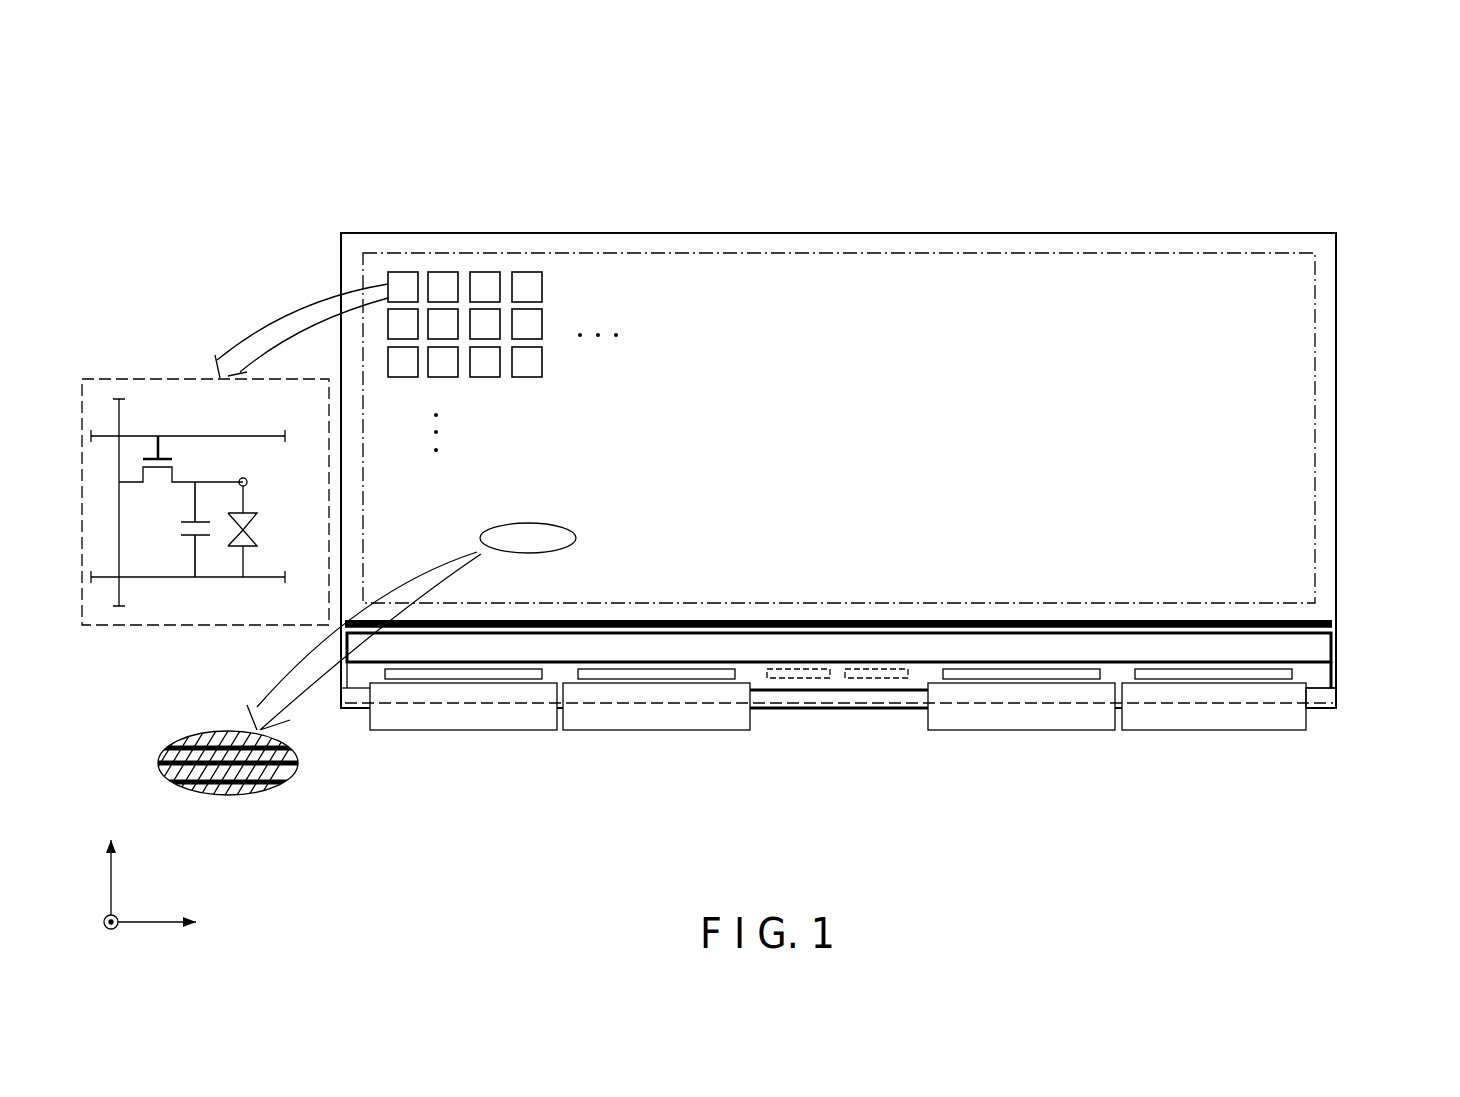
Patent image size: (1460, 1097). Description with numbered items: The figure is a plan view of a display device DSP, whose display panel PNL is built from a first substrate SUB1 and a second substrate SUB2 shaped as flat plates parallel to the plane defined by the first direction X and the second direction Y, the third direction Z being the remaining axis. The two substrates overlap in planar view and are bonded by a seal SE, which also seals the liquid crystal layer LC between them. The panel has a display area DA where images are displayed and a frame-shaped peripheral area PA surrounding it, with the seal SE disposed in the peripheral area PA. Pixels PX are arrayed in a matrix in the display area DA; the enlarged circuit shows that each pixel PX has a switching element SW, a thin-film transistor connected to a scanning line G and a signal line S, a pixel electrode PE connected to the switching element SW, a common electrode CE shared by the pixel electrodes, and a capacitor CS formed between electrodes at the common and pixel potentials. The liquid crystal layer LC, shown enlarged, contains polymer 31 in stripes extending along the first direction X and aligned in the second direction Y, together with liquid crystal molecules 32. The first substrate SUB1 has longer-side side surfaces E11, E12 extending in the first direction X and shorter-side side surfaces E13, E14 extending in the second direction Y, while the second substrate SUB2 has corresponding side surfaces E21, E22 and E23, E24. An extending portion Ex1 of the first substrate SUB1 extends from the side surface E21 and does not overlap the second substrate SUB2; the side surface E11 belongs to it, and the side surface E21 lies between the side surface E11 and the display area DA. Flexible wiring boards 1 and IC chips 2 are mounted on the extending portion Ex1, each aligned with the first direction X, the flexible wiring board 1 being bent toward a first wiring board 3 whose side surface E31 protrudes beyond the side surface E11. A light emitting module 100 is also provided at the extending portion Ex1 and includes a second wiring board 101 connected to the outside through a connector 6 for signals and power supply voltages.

The display device DSP is at (863, 407).
The display panel PNL is at (863, 467).
The second wiring board 101 is at (1333, 715).
The side surface E12 is at (838, 188).
The side surface E22 is at (1060, 231).
The side surface E13 is at (262, 450).
The side surface E23 is at (334, 251).
The side surface E14 is at (1393, 470).
The side surface E24 is at (1341, 320).
The side surface E11 is at (882, 694).
The side surface E21 is at (927, 631).
The side surface E31 is at (905, 712).
The first substrate SUB1 is at (1322, 675).
The second substrate SUB2 is at (1337, 371).
The display area DA is at (1286, 423).
The peripheral area PA is at (1321, 463).
The seal SE is at (1328, 503).
The liquid crystal layer LC is at (750, 676).
The pixel PX is at (485, 272).
The scanning line G is at (131, 436).
The signal line S is at (117, 517).
The switching element SW is at (182, 469).
The pixel electrode PE is at (250, 482).
The common electrode CE is at (263, 577).
The capacitor CS is at (176, 531).
The flexible wiring board 1 is at (440, 732).
The IC chip 2 is at (477, 680).
The first wiring board 3 is at (1322, 712).
The light emitting module 100 is at (763, 650).
The extending portion Ex1 is at (800, 681).
The connector 6 is at (807, 679).
The polymer 31 is at (202, 765).
The liquid crystal molecules 32 is at (214, 763).
The first direction X is at (152, 879).
The second direction Y is at (152, 879).
The third direction Z is at (152, 879).